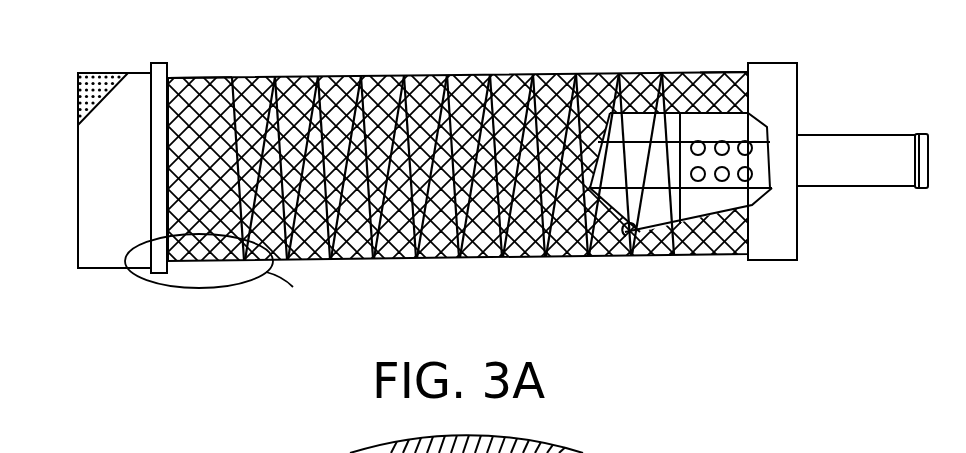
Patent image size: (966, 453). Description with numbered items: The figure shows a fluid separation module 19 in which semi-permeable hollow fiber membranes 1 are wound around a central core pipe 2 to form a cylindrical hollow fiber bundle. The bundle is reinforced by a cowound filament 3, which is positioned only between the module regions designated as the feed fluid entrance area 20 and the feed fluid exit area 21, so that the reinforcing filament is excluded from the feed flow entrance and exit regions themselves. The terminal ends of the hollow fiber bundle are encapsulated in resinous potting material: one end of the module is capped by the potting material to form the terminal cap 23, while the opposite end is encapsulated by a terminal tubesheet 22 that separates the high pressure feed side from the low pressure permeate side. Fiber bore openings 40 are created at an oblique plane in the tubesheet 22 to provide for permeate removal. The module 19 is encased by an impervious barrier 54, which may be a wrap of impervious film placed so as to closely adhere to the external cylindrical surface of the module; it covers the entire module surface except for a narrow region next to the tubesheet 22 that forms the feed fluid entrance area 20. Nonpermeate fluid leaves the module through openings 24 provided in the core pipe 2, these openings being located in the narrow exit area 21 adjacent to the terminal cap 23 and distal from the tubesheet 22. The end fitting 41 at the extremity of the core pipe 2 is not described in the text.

The semi-permeable hollow fiber membranes 1 is at (723, 253).
The core pipe 2 is at (832, 178).
The cowound filament 3 is at (627, 252).
The fluid separation module 19 is at (205, 242).
The feed fluid entrance area 20 is at (168, 79).
The feed fluid exit area 21 is at (707, 72).
The terminal tubesheet 22 is at (107, 257).
The terminal cap 23 is at (787, 236).
The openings 24 is at (753, 147).
The fiber bore openings 40 is at (96, 73).
The end cap 41 is at (918, 133).
The impervious barrier 54 is at (420, 260).